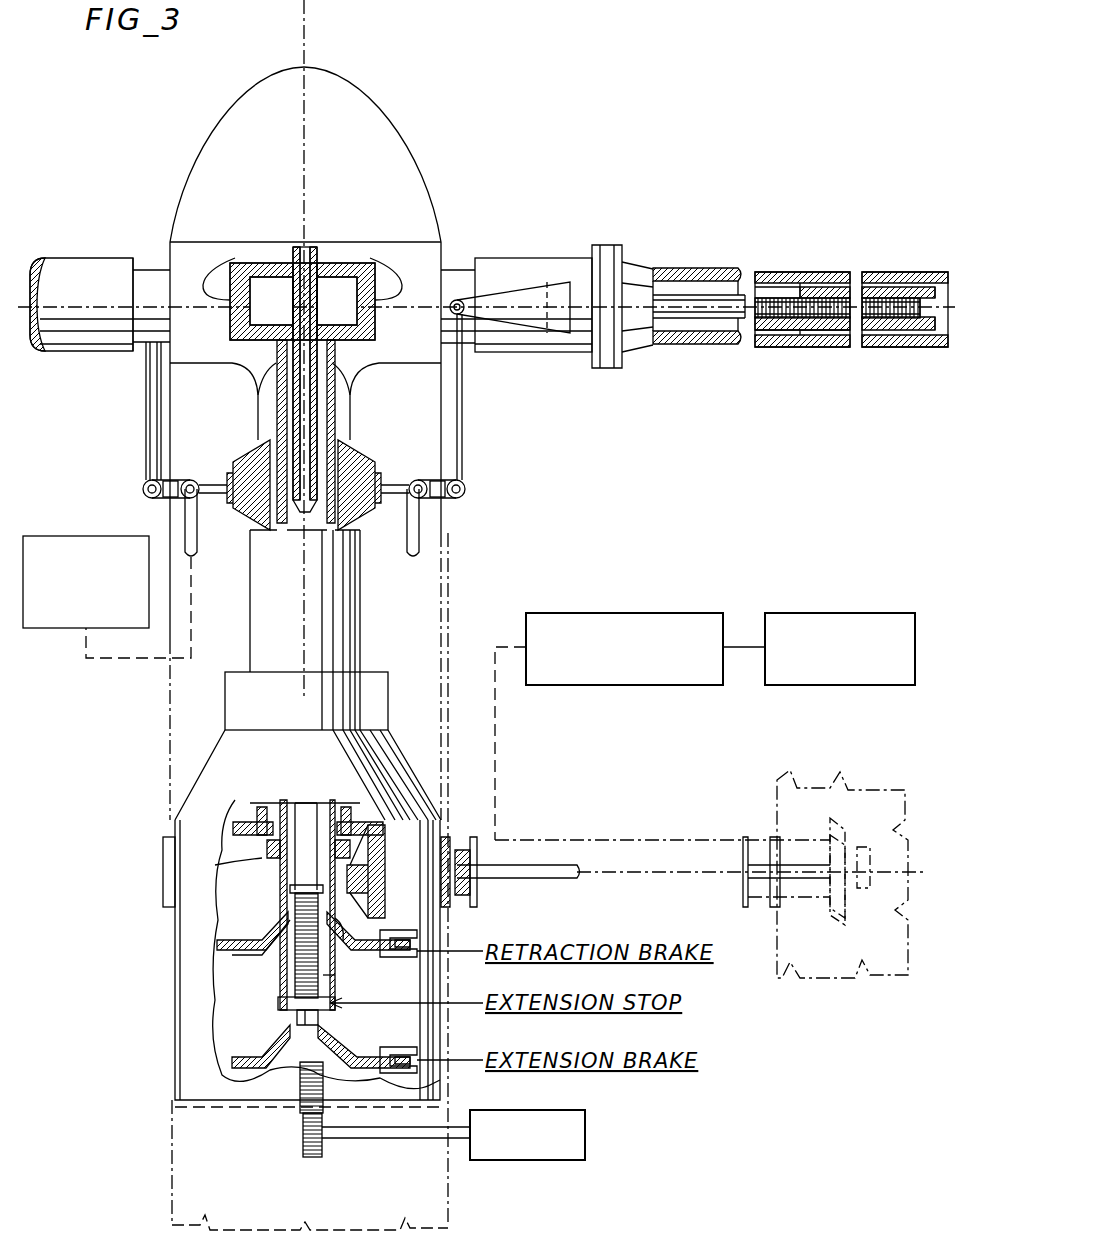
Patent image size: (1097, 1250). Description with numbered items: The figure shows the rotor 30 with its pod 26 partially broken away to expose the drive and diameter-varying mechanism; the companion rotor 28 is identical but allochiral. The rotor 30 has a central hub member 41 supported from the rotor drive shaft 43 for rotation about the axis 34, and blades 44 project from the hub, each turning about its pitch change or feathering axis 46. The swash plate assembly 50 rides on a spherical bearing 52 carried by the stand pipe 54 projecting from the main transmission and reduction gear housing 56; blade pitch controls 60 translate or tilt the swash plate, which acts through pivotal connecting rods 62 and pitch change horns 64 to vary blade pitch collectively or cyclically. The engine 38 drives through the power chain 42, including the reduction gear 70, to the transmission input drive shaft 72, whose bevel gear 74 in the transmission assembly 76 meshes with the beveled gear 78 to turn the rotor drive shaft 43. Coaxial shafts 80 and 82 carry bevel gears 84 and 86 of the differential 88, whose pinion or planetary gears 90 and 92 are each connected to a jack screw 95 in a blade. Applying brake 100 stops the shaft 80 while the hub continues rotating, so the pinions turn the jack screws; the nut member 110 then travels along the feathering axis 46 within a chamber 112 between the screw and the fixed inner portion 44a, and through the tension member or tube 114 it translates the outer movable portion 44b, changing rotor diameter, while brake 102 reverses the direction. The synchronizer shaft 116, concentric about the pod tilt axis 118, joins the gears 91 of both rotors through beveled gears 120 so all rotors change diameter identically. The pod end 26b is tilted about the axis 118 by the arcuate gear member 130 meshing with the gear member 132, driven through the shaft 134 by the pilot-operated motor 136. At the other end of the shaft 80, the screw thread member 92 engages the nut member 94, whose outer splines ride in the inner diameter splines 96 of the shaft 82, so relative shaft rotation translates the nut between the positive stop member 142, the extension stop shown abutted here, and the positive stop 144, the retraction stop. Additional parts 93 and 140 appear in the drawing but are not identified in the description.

The pod 26 is at (450, 582).
The pod end 26b is at (238, 115).
The rotor 28 is at (795, 960).
The rotor 30 is at (437, 100).
The axis 34 is at (304, 160).
The engine 38 is at (830, 613).
The central hub member 41 is at (432, 248).
The power chain 42 is at (500, 730).
The rotor drive shaft 43 is at (356, 420).
The blade 44 is at (50, 262).
The fixed inner portion of blade 44a is at (690, 345).
The outer movable portion of blade 44b is at (880, 272).
The pitch change or feathering axis 46 is at (68, 300).
The swash plate assembly 50 is at (193, 466).
The spherical bearing 52 is at (374, 462).
The stand pipe 54 is at (305, 601).
The main transmission and reduction gear housing 56 is at (308, 746).
The blade pitch controls 60 is at (30, 536).
The pivotal connecting rods 62 is at (146, 405).
The pitch change horns 64 is at (512, 292).
The reduction gear 70 is at (630, 613).
The transmission input drive shaft 72 is at (465, 848).
The bevel gear 74 is at (455, 835).
The transmission assembly 76 is at (230, 852).
The beveled gear 78 is at (170, 840).
The shaft 80 is at (298, 805).
The shaft 82 is at (283, 523).
The bevel gear 84 is at (272, 262).
The bevel gear 86 is at (262, 366).
The differential 88 is at (337, 230).
The pinion or planetary gear 90 is at (223, 270).
The gear 91 is at (215, 862).
The pinion or planetary gear 92 is at (393, 275).
The stop nut 93 is at (342, 942).
The nut member 94 is at (330, 985).
The jack screw 95 is at (785, 298).
The inner diameter splines 96 is at (283, 905).
The clutch or brake member 100 is at (250, 1068).
The clutch or brake member 102 is at (235, 945).
The nut member 110 is at (810, 345).
The chamber 112 is at (702, 295).
The tension member or tube 114 is at (905, 345).
The synchronizer shaft 116 is at (535, 865).
The pod tilt axis 118 is at (676, 880).
The beveled gear 120 is at (372, 838).
The arcuate gear member 130 is at (310, 1075).
The gear member 132 is at (310, 1140).
The shaft 134 is at (402, 1133).
The pilot-operated motor 136 is at (527, 1160).
The tube 140 is at (283, 868).
The positive stop member 142 is at (288, 998).
The positive stop 144 is at (327, 848).